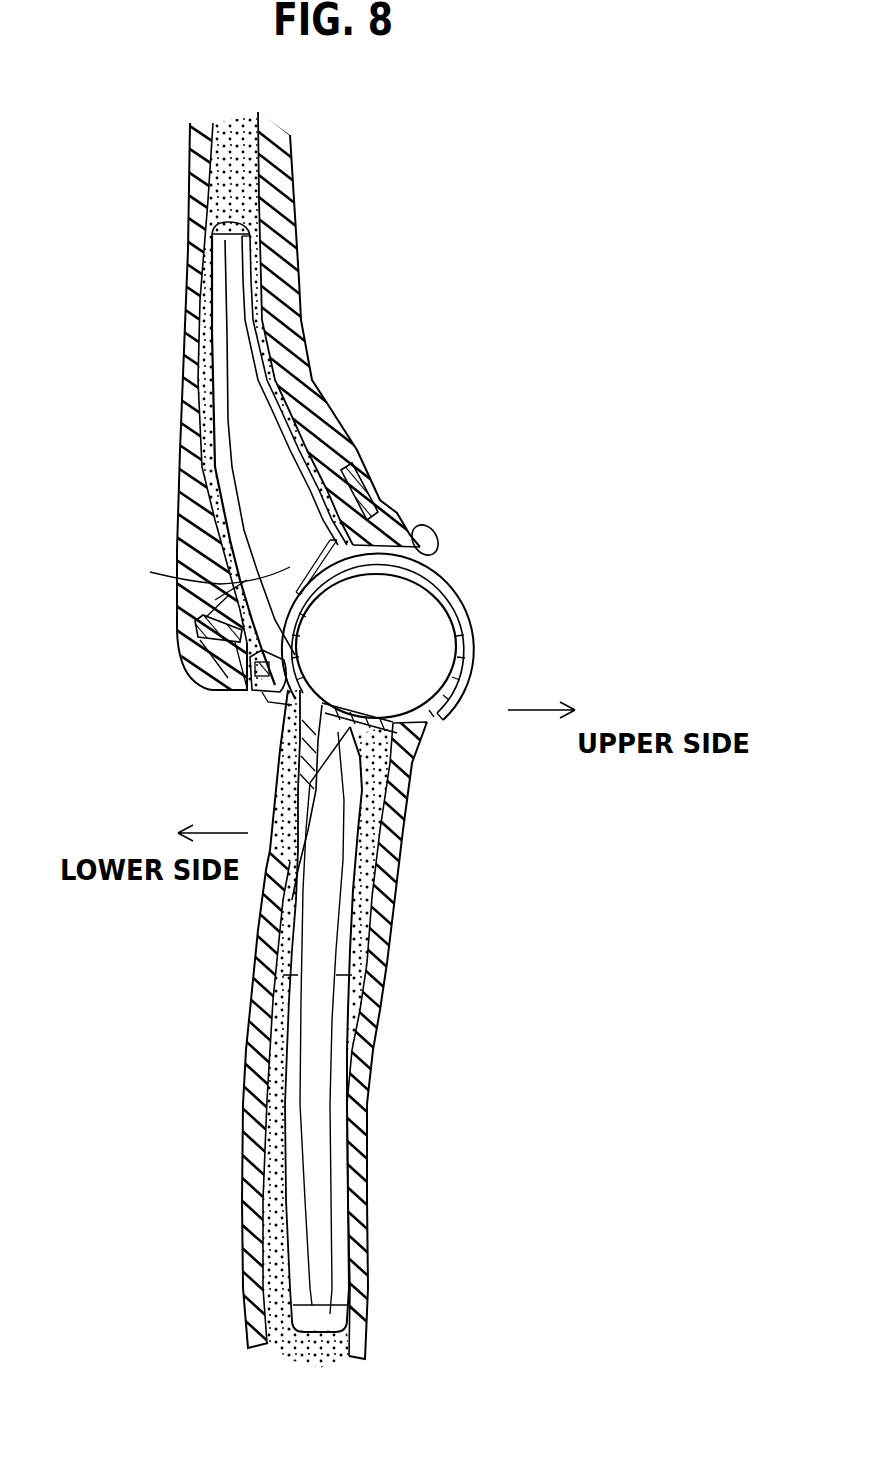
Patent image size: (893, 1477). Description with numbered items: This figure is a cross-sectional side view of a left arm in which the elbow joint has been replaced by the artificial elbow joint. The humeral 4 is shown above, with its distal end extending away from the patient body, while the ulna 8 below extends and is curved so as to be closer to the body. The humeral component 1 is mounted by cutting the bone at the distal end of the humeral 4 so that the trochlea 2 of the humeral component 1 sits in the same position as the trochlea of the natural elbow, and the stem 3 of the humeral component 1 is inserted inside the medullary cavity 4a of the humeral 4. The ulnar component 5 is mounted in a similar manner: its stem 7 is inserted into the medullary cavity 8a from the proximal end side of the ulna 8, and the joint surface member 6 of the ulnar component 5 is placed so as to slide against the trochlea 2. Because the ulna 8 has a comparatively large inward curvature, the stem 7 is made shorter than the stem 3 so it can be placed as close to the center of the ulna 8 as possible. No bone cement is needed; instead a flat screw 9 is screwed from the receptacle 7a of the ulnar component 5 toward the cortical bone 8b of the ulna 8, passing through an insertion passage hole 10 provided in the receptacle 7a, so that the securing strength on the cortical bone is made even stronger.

The humeral component 1 is at (349, 893).
The trochlea 2 is at (432, 657).
The stem 3 is at (323, 1025).
The humeral 4 is at (381, 949).
The medullary cavity 4a is at (388, 830).
The ulnar component 5 is at (282, 392).
The joint surface member 6 is at (206, 397).
The stem 7 is at (275, 473).
The receptacle 7a is at (427, 527).
The ulna 8 is at (297, 300).
The medullary cavity 8a is at (268, 350).
The cortical bone 8b is at (377, 498).
The screw 9 is at (193, 677).
The insertion passage hole 10 is at (243, 690).